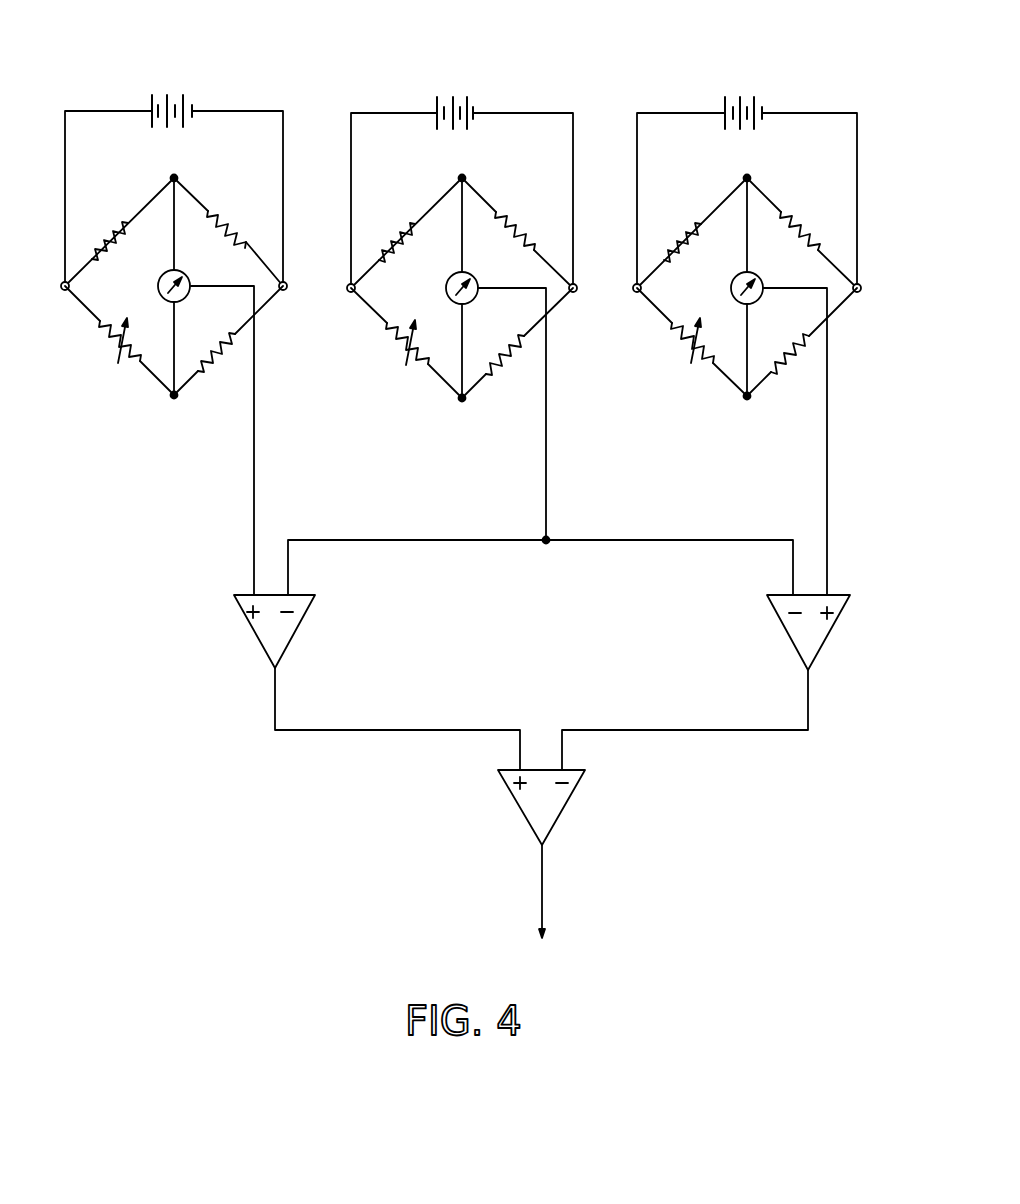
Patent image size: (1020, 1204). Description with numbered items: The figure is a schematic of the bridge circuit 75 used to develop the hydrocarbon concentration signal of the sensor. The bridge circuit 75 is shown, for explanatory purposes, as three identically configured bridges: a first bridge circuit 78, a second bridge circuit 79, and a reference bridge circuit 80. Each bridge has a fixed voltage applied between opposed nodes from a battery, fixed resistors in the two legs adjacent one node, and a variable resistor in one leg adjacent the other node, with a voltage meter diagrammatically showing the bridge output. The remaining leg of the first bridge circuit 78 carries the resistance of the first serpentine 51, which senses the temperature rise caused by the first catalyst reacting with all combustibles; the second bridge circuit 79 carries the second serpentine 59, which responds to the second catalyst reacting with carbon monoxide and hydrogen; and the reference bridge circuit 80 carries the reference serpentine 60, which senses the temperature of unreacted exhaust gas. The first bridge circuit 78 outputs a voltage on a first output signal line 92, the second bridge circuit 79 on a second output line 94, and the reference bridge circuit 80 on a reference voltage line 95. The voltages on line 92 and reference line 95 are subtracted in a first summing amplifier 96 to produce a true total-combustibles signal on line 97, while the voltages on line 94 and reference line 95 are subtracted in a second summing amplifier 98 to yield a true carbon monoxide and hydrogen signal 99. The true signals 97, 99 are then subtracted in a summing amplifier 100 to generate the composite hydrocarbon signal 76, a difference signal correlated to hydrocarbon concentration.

The bridge circuit 75 is at (650, 62).
The first bridge circuit 78 is at (171, 293).
The reference bridge circuit 80 is at (463, 294).
The second bridge circuit 79 is at (757, 295).
The first serpentine 51 is at (110, 238).
The reference serpentine 60 is at (400, 240).
The second serpentine 59 is at (687, 240).
The first output signal line 92 is at (254, 490).
The reference voltage line 95 is at (546, 493).
The second output line 94 is at (827, 493).
The first summing amplifier 96 is at (297, 635).
The second summing amplifier 98 is at (782, 632).
The line 97 is at (347, 730).
The true signal 99 is at (738, 730).
The summing amplifier 100 is at (565, 808).
The composite signal 76 is at (542, 893).